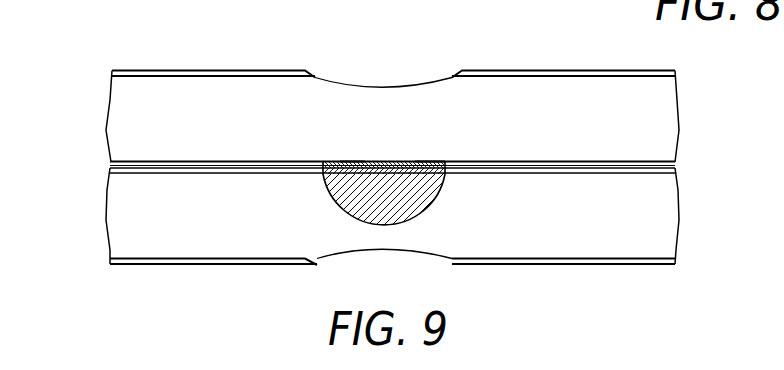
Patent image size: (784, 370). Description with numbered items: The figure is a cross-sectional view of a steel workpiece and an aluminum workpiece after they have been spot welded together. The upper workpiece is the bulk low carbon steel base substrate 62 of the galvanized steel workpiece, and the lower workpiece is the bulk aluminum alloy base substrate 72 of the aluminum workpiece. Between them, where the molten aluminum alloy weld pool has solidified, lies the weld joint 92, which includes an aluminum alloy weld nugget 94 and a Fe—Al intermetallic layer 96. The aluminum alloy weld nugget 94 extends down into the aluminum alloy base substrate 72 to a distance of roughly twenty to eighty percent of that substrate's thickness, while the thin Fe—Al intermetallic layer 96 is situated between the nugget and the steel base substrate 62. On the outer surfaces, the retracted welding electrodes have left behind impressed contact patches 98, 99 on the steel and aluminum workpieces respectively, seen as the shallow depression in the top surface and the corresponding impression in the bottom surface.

The low carbon steel base substrate 62 is at (657, 119).
The aluminum alloy base substrate 72 is at (652, 218).
The weld joint 92 is at (351, 151).
The aluminum alloy weld nugget 94 is at (410, 208).
The Fe—Al intermetallic layer 96 is at (422, 160).
The impressed contact patch 98 is at (402, 82).
The impressed contact patch 99 is at (382, 250).